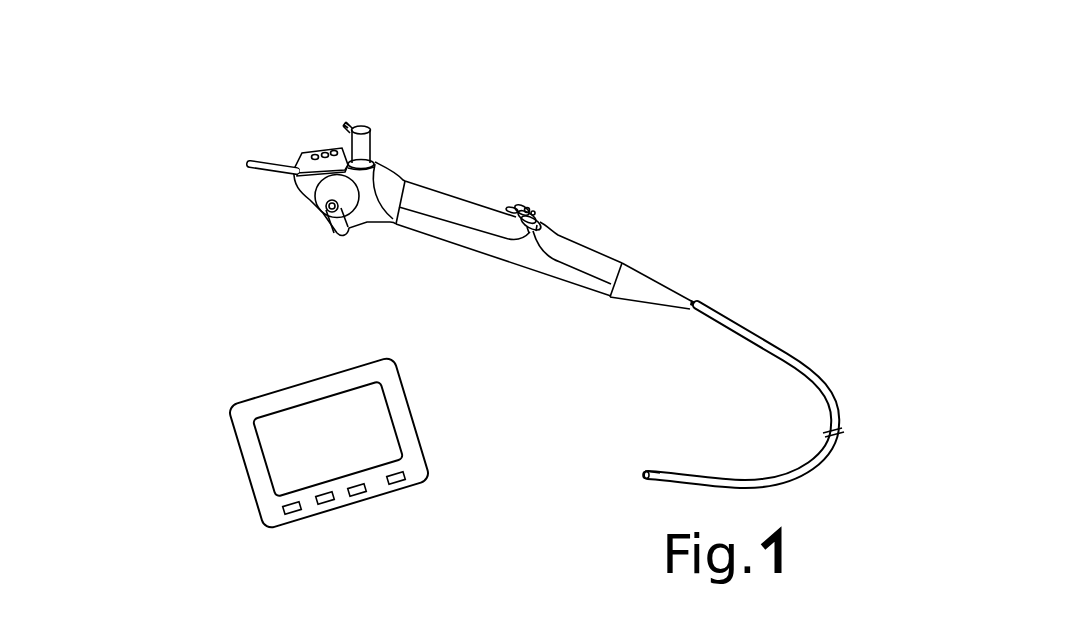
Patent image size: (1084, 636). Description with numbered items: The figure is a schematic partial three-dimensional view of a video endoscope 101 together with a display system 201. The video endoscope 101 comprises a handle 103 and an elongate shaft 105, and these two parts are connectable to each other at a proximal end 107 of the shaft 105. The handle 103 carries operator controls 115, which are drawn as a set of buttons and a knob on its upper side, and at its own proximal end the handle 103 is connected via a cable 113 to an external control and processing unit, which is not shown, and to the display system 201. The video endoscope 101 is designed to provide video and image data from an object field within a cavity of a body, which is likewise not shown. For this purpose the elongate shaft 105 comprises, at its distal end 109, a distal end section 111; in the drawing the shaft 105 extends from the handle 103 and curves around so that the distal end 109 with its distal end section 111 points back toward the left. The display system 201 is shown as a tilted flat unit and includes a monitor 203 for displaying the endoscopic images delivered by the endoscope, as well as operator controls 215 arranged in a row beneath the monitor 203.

The video endoscope 101 is at (488, 189).
The handle 103 is at (428, 190).
The elongate shaft 105 is at (756, 334).
The proximal end 107 is at (706, 292).
The distal end 109 is at (608, 478).
The distal end section 111 is at (650, 470).
The cable 113 is at (263, 160).
The operator controls 115 is at (324, 150).
The display system 201 is at (282, 366).
The monitor 203 is at (353, 417).
The operator controls 215 is at (322, 503).